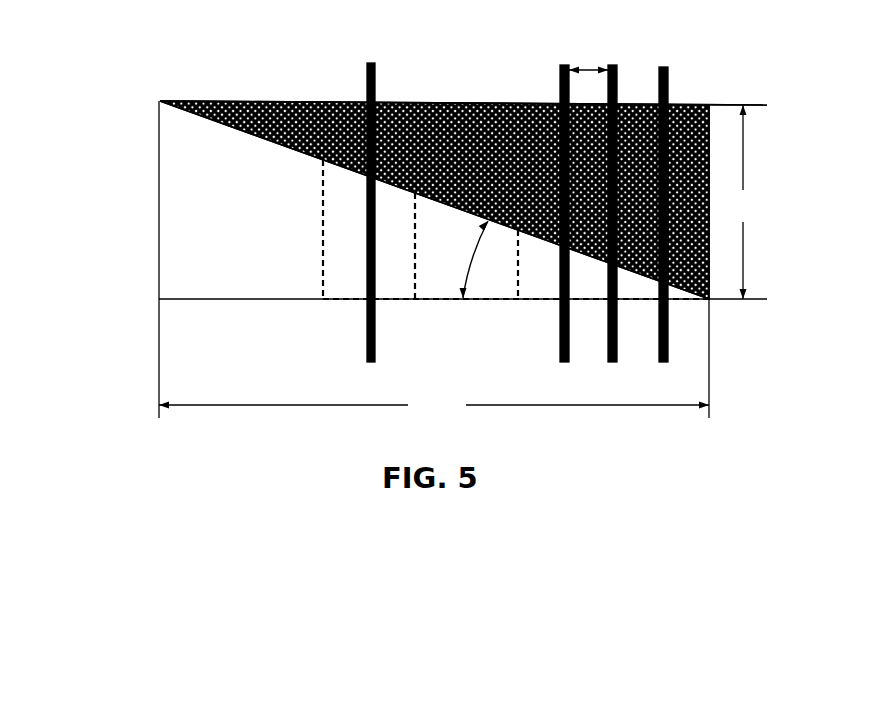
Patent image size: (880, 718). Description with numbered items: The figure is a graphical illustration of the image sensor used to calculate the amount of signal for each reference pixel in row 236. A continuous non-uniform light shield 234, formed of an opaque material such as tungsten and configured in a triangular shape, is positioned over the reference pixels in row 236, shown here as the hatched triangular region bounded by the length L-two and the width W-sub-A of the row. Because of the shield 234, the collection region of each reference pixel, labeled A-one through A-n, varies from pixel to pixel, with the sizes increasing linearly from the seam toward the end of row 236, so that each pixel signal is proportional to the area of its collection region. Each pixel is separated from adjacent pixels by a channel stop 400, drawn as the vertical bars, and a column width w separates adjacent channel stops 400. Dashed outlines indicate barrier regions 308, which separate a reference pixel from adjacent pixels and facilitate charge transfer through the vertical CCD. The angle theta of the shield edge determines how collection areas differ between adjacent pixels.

The continuous non-uniform light shield 234 is at (480, 101).
The row 236 is at (140, 190).
The barrier region 308 is at (533, 283).
The channel stop 400 is at (371, 62).